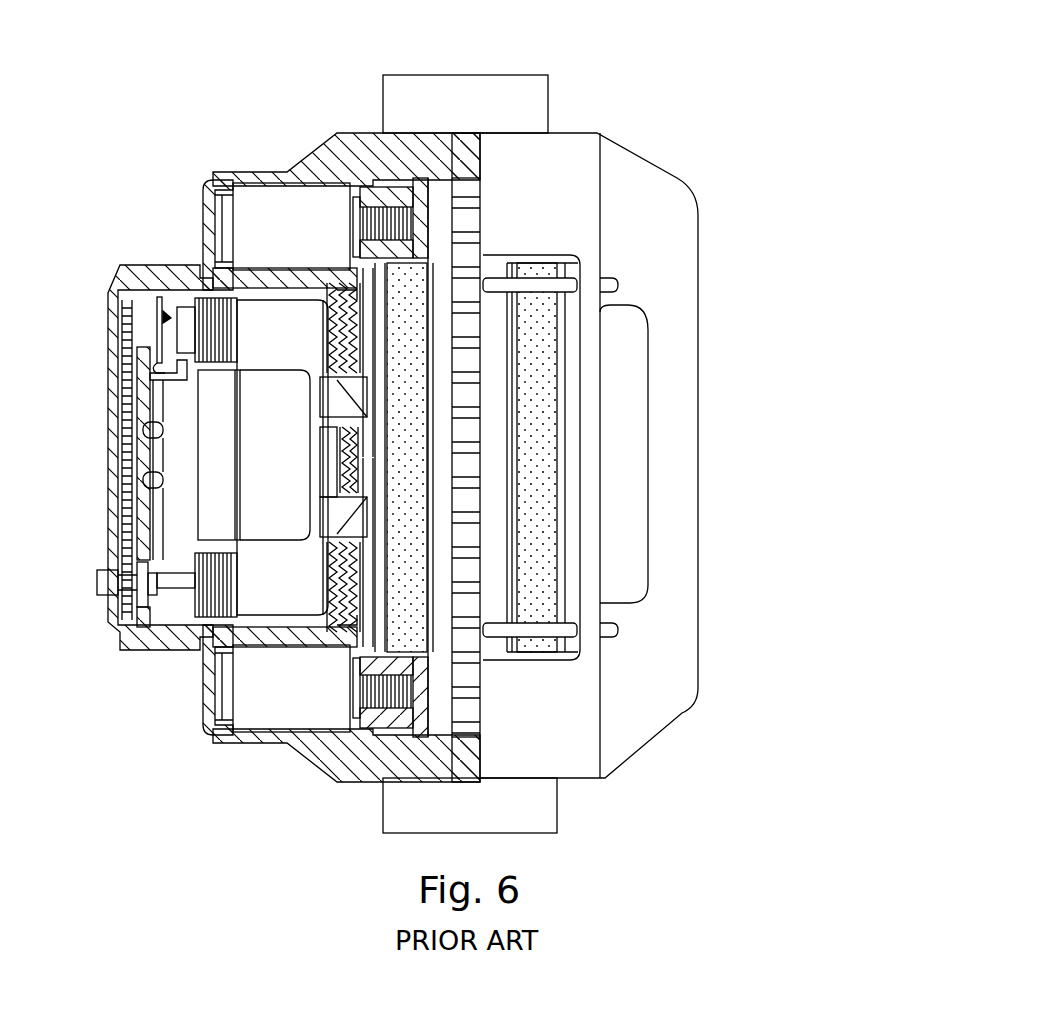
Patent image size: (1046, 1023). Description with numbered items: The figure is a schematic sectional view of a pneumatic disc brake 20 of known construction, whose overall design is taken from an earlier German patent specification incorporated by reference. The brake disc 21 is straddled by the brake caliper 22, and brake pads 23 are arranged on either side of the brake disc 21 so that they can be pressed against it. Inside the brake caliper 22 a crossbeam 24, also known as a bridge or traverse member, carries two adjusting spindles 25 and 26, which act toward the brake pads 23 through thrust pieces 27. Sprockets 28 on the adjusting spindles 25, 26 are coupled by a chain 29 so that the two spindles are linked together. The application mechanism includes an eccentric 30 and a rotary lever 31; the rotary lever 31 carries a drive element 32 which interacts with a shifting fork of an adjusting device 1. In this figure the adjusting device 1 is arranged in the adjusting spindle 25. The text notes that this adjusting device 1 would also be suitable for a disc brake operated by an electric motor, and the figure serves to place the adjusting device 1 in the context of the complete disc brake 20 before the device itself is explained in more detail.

The adjusting device 1 is at (164, 312).
The disc brake 20 is at (588, 104).
The brake disc 21 is at (440, 665).
The brake caliper 22 is at (345, 745).
The brake pads 23 is at (530, 265).
The crossbeam 24 is at (283, 303).
The adjusting spindle 25 is at (210, 327).
The adjusting spindle 26 is at (215, 603).
The thrust pieces 27 is at (360, 587).
The sprockets 28 is at (125, 632).
The chain 29 is at (125, 360).
The eccentric 30 is at (218, 508).
The rotary lever 31 is at (155, 463).
The drive element 32 is at (172, 376).